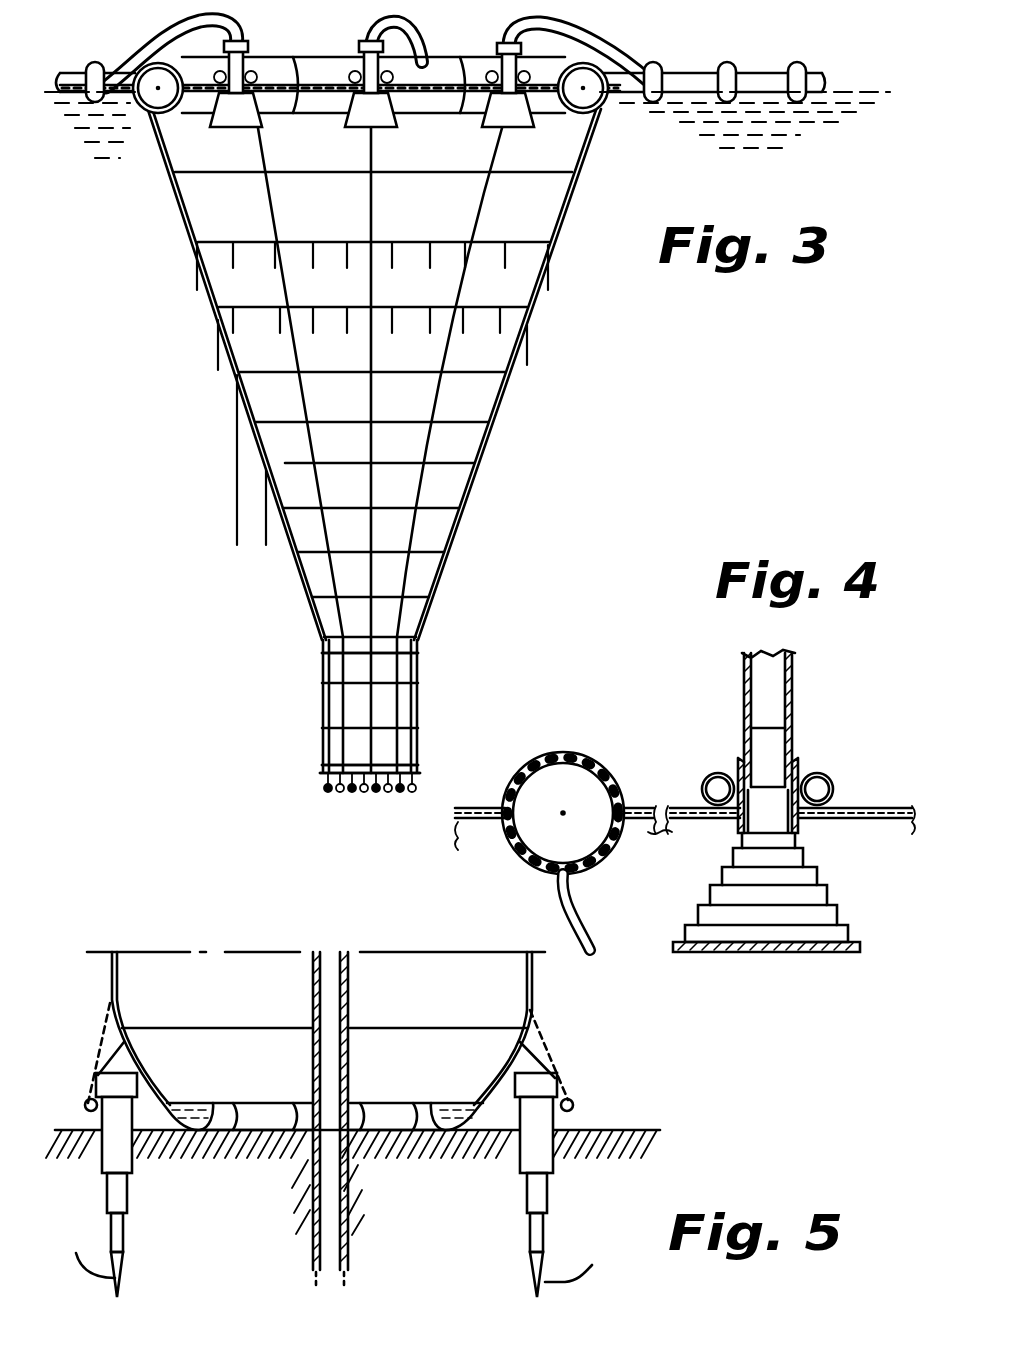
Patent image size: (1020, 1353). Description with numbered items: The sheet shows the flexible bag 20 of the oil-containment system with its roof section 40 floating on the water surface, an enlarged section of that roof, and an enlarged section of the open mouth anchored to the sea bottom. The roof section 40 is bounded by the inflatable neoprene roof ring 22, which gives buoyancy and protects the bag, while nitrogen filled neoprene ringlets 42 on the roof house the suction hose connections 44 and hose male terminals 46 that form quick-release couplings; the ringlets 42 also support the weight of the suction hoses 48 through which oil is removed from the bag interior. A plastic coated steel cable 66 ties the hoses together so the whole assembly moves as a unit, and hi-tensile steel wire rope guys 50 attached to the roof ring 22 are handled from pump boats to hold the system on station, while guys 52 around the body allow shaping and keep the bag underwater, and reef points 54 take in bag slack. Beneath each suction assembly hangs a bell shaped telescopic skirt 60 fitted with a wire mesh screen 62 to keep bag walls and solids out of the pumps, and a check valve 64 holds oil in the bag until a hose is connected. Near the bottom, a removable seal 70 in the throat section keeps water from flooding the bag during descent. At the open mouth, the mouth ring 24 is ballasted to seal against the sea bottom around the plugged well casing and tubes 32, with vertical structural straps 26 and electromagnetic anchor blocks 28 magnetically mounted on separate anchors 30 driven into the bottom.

In FIG. 3, the flexible bag 20 is at (470, 440).
In FIG. 5, the flexible bag 20 is at (520, 1002).
In FIG. 3, the roof ring 22 is at (440, 66).
In FIG. 4, the roof ring 22 is at (575, 755).
In FIG. 3, the mouth ring 24 is at (400, 777).
In FIG. 5, the mouth ring 24 is at (400, 1125).
In FIG. 3, the vertical structural straps 26 is at (320, 776).
In FIG. 5, the electromagnetic anchor blocks 28 is at (545, 1085).
In FIG. 5, the anchors 30 is at (548, 1162).
In FIG. 5, the casing and tubes 32 is at (348, 1250).
In FIG. 3, the roof section 40 is at (336, 92).
In FIG. 4, the roof section 40 is at (688, 810).
In FIG. 3, the nitrogen filled neoprene ringlets 42 is at (548, 130).
In FIG. 4, the nitrogen filled neoprene ringlets 42 is at (817, 779).
In FIG. 4, the suction hose connections 44 is at (742, 775).
In FIG. 4, the hose male terminals 46 is at (745, 737).
In FIG. 3, the suction hoses 48 is at (578, 34).
In FIG. 4, the suction hoses 48 is at (793, 690).
In FIG. 4, the steel wire rope guys 50 is at (468, 818).
In FIG. 3, the guys 52 is at (237, 490).
In FIG. 3, the reef points 54 is at (524, 332).
In FIG. 4, the telescopic skirts 60 is at (835, 902).
In FIG. 4, the wire mesh screen 62 is at (727, 942).
In FIG. 4, the check valves 64 is at (758, 755).
In FIG. 3, the plastic coated steel cable 66 is at (340, 58).
In FIG. 3, the removable seal 70 is at (413, 650).